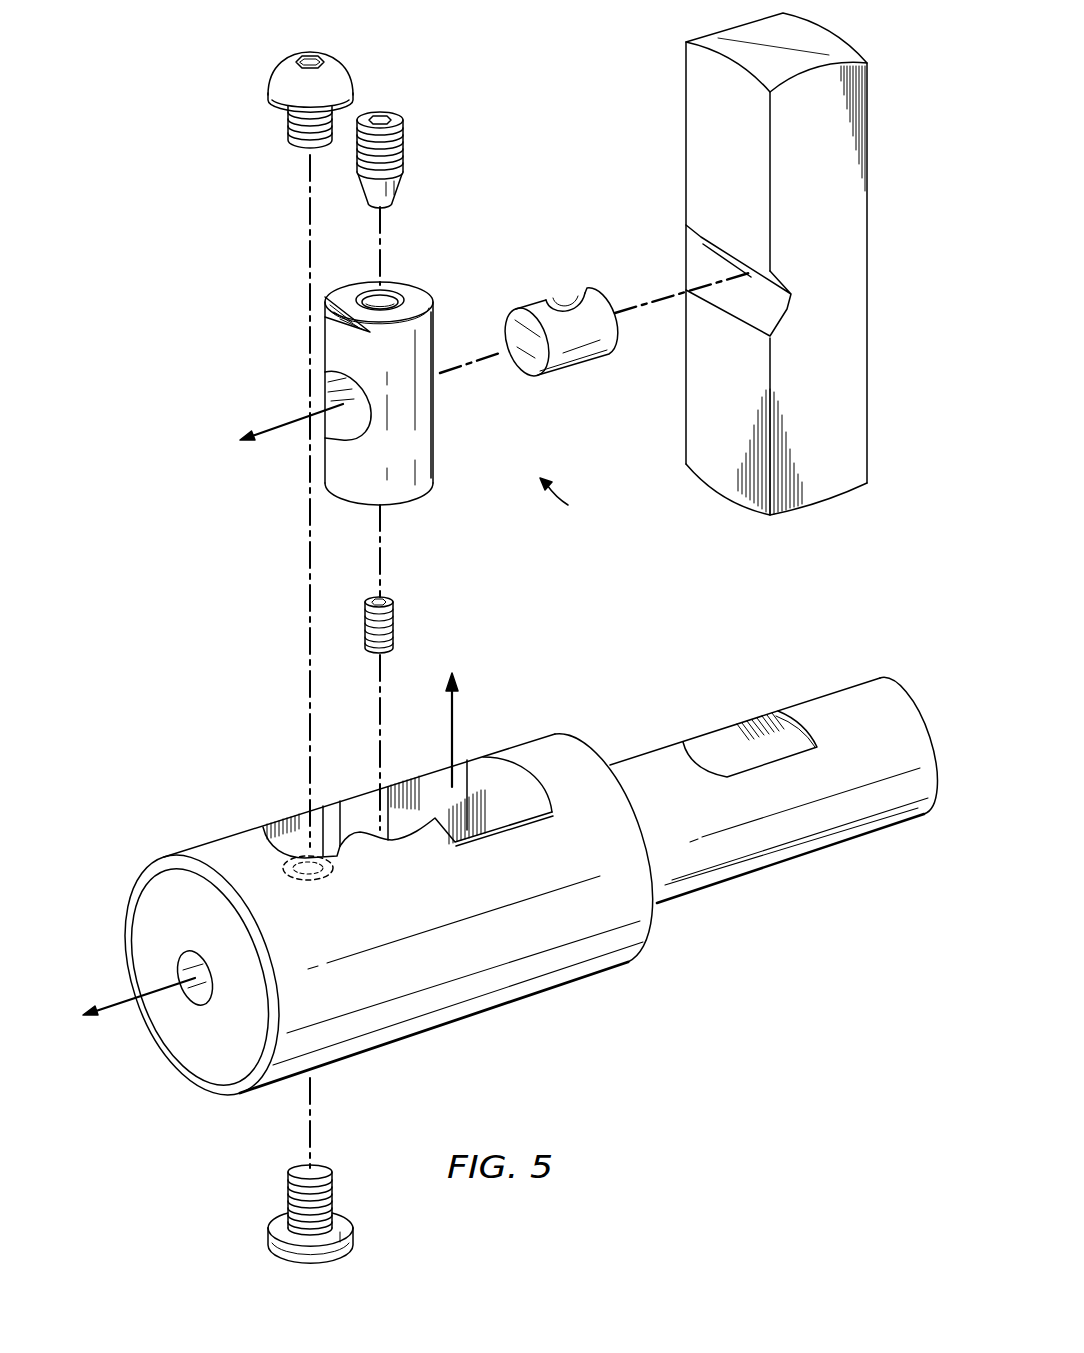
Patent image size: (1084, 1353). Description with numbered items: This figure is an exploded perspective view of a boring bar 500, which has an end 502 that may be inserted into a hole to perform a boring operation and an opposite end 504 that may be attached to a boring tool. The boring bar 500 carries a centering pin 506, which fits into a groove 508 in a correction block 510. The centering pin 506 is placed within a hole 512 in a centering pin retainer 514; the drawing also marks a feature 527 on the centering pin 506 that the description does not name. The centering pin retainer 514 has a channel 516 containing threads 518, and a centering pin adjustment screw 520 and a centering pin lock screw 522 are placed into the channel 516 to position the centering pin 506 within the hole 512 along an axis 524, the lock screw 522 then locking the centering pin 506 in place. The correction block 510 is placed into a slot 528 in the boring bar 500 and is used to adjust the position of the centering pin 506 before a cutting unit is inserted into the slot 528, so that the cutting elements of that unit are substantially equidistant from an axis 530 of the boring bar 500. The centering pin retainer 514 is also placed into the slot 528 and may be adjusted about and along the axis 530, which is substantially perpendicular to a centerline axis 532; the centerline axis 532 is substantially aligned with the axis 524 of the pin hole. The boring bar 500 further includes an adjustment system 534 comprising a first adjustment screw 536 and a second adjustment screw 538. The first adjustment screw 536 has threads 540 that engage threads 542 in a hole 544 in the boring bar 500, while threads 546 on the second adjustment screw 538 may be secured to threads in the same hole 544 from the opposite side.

The boring bar 500 is at (603, 1007).
The end 502 is at (188, 1062).
The end 504 is at (885, 690).
The centering pin 506 is at (580, 367).
The groove 508 is at (720, 268).
The correction block 510 is at (857, 229).
The hole 512 is at (350, 422).
The centering pin retainer 514 is at (435, 418).
The channel 516 is at (398, 282).
The threads 518 is at (367, 288).
The centering pin adjustment screw 520 is at (400, 115).
The centering pin lock screw 522 is at (393, 630).
The axis 524 is at (291, 406).
The notch 527 is at (565, 302).
The slot 528 is at (512, 790).
The axis 530 is at (455, 707).
The axis 532 is at (117, 1010).
The adjustment system 534 is at (575, 500).
The first adjustment screw 536 is at (282, 68).
The second adjustment screw 538 is at (308, 1263).
The threads 540 is at (285, 125).
The threads 542 is at (307, 878).
The hole 544 is at (290, 832).
The threads 546 is at (288, 1195).